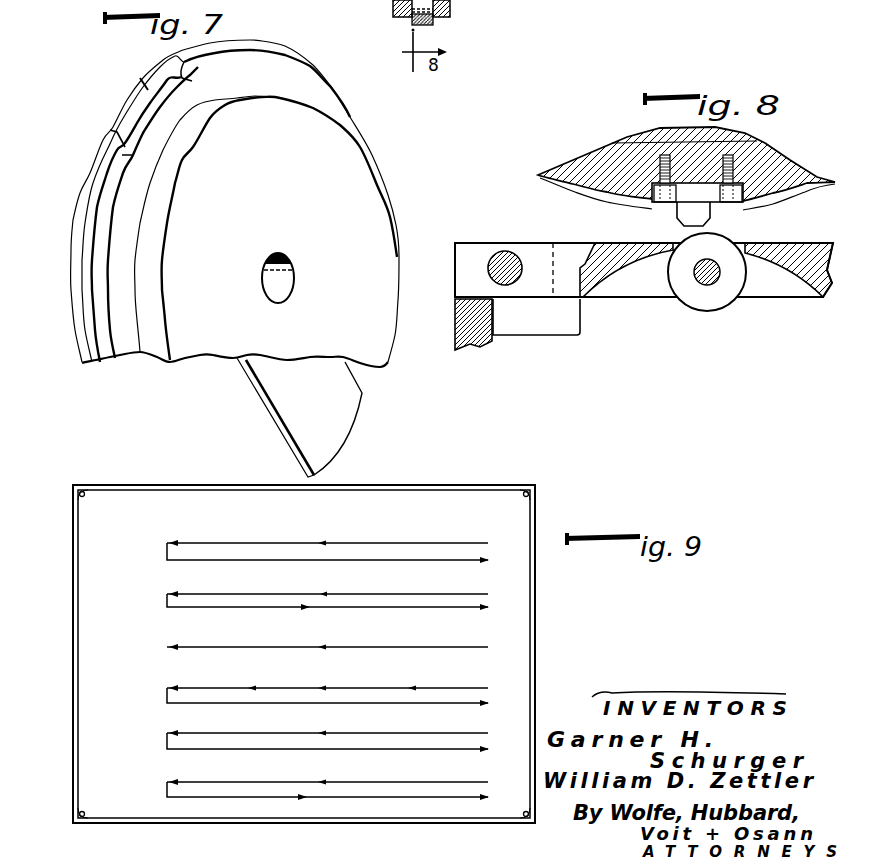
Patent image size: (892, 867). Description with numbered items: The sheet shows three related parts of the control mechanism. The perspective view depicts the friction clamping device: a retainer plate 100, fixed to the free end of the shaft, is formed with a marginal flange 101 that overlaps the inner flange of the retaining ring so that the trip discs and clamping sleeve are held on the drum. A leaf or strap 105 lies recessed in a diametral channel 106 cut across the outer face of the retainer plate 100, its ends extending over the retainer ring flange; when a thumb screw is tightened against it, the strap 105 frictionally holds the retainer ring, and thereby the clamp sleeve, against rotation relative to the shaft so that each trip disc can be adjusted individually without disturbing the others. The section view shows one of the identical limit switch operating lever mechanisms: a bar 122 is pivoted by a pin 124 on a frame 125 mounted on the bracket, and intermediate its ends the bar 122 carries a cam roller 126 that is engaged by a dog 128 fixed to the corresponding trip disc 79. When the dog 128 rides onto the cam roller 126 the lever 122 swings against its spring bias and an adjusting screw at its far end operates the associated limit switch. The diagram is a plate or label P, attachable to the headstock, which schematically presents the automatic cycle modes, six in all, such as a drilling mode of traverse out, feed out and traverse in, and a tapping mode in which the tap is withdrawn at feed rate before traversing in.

In FIG. 7, the retainer plate 100 is at (333, 125).
In FIG. 7, the marginal flange 101 is at (263, 48).
In FIG. 7, the strap 105 is at (141, 84).
In FIG. 7, the diametral channel 106 is at (194, 83).
In FIG. 8, the trip disc 79 is at (612, 153).
In FIG. 8, the bar 122 is at (393, 8).
In FIG. 8, the pin 124 is at (507, 253).
In FIG. 8, the frame 125 is at (483, 342).
In FIG. 8, the cam roller 126 is at (438, 20).
In FIG. 8, the dog 128 is at (677, 228).
In FIG. 9, the plate P is at (486, 493).